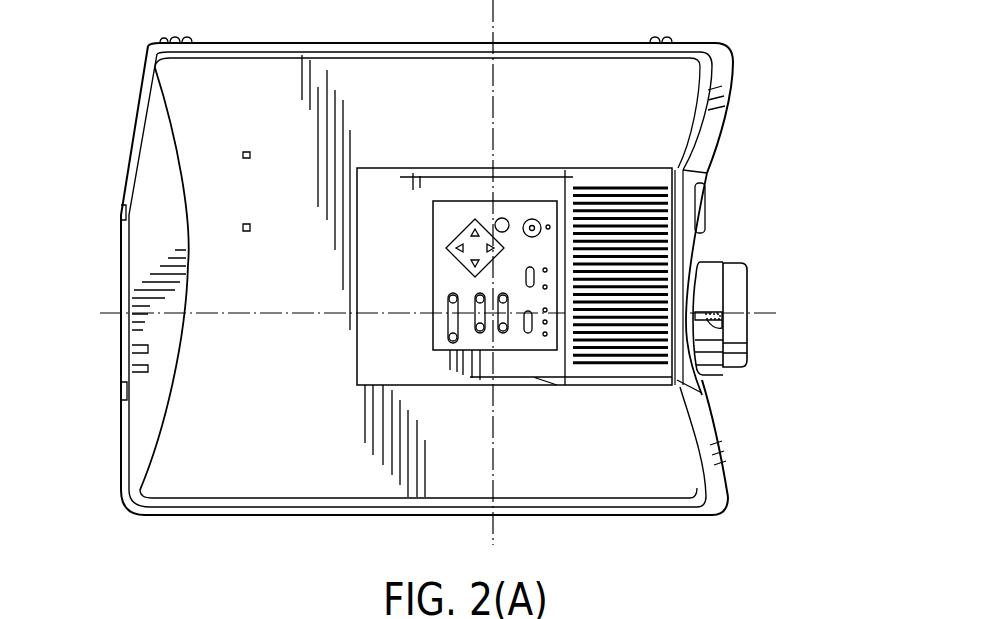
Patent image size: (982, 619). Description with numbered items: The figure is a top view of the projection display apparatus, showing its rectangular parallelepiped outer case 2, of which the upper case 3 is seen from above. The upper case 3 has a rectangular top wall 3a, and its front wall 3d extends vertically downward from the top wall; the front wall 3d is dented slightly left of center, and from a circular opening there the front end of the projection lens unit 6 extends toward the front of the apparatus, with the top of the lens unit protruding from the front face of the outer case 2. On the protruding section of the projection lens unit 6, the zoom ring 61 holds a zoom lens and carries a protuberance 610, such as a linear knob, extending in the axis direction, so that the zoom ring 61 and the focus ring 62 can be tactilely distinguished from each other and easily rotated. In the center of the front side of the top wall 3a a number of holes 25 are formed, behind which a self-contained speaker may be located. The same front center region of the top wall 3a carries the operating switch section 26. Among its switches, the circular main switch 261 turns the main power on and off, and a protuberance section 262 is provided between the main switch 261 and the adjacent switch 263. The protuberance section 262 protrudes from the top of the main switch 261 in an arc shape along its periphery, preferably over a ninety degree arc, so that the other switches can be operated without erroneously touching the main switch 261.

The outer case 2 is at (150, 43).
The upper case 3 is at (430, 475).
The top wall 3a is at (343, 446).
The front wall 3d is at (720, 443).
The holes 25 is at (652, 188).
The operating switch section 26 is at (448, 208).
The main switch 261 is at (533, 219).
The protuberance section 262 is at (517, 225).
The adjacent switch 263 is at (500, 219).
The projection lens unit 6 is at (827, 205).
The zoom ring 61 is at (715, 268).
The focus ring 62 is at (747, 278).
The protuberance 610 is at (717, 323).